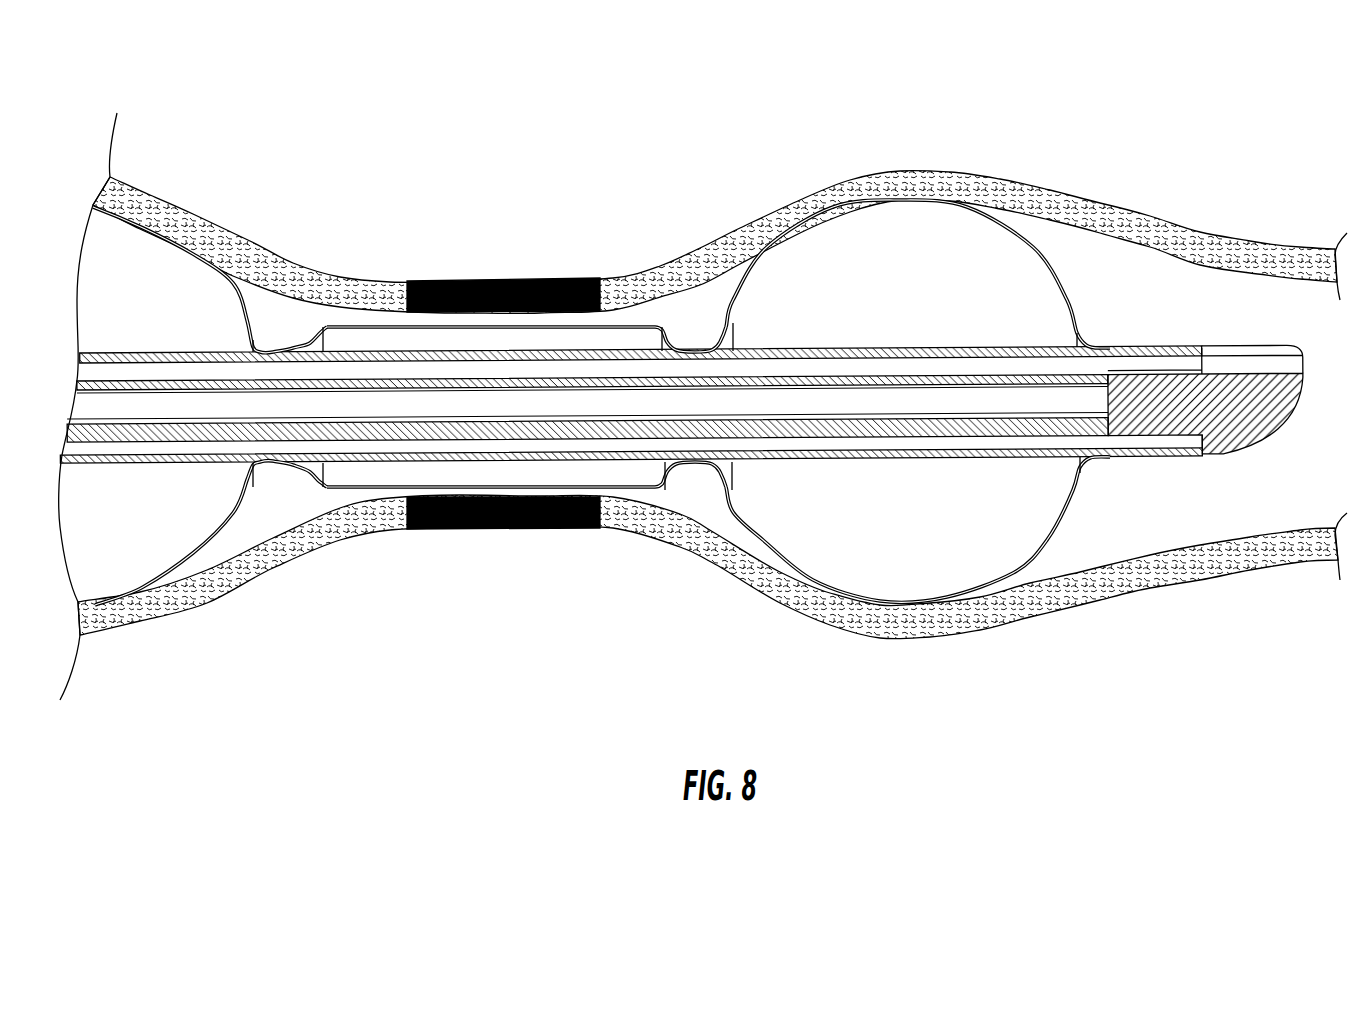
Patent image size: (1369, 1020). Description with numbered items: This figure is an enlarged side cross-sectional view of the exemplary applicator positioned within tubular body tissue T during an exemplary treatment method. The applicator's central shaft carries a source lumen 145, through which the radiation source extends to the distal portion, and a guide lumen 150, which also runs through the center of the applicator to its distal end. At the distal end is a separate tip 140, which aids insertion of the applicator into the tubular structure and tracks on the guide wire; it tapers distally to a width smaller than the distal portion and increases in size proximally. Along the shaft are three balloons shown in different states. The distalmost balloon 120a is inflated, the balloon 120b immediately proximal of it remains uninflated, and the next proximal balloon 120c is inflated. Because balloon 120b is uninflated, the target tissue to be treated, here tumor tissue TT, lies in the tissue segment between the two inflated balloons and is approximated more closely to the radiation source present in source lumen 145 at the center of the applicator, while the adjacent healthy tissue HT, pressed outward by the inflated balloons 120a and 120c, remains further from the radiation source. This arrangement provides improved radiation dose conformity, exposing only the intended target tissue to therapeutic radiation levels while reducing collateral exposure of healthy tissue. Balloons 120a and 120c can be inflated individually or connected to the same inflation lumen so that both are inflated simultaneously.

The distalmost balloon 120a is at (920, 557).
The balloon 120b is at (575, 465).
The next proximal balloon 120c is at (108, 563).
The tip 140 is at (1250, 415).
The source lumen 145 is at (702, 400).
The guide lumen 150 is at (273, 370).
The tubular body tissue T is at (1078, 185).
The healthy tissue HT is at (338, 253).
The tumor tissue TT is at (415, 270).